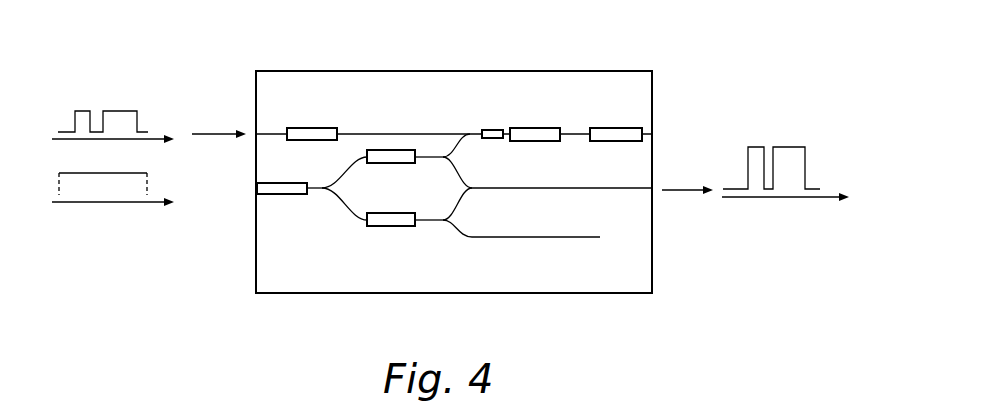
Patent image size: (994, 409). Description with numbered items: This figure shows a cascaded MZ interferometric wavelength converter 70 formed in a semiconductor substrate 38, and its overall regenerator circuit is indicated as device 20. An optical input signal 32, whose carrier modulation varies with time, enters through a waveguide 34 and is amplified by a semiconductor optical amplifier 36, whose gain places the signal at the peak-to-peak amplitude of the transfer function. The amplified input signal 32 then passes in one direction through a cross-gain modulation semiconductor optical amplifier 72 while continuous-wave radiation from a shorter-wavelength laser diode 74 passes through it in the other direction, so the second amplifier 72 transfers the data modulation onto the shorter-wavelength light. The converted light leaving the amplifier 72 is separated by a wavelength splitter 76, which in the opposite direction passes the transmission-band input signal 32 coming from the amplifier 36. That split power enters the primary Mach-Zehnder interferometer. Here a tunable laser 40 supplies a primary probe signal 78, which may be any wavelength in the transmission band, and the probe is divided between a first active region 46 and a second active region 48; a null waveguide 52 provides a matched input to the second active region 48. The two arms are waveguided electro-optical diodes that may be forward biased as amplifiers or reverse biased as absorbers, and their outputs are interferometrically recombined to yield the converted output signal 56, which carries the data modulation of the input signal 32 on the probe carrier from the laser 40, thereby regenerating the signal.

The optical signal converter 20 is at (390, 275).
The optical input signal 32 is at (84, 85).
The waveguide 34 is at (270, 133).
The semiconductor optical amplifier 36 is at (320, 127).
The semiconductor substrate 38 is at (315, 294).
The laser 40 is at (273, 196).
The first active region 46 is at (392, 165).
The second active region 48 is at (370, 228).
The null waveguide 52 is at (548, 240).
The converted output signal 56 is at (770, 118).
The cascaded MZ interferometric wavelength converter 70 is at (618, 39).
The cross-gain modulation semiconductor optical amplifier 72 is at (535, 128).
The 1520 nm laser diode 74 is at (613, 128).
The 1520/1550 splitter 76 is at (490, 129).
The primary probe signal 78 is at (88, 226).